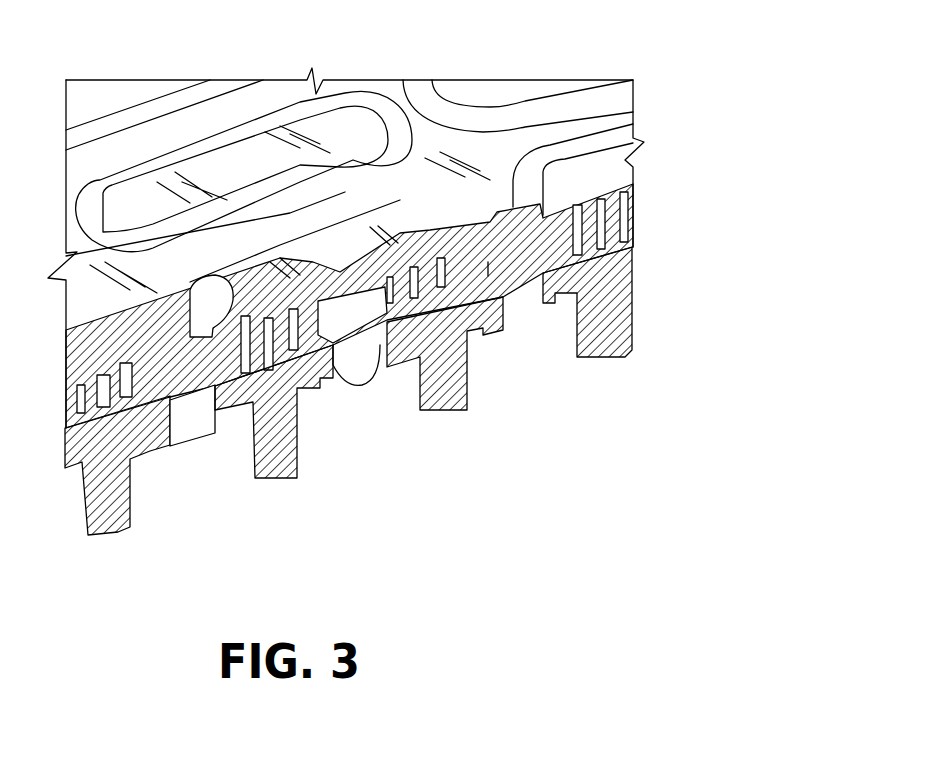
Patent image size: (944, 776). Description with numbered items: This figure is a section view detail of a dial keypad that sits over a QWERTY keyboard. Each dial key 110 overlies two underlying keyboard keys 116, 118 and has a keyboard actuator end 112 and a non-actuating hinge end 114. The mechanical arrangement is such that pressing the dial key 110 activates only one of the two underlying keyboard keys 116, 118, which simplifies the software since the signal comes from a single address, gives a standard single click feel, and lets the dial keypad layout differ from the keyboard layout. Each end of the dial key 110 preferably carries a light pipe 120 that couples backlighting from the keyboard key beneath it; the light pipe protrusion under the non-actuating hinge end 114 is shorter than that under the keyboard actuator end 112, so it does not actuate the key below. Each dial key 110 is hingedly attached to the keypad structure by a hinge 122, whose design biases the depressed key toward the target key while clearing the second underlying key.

The dial key 110 is at (346, 250).
The keyboard actuator end 112 is at (235, 408).
The non-actuating hinge end 114 is at (403, 297).
The keyboard key 116 is at (438, 288).
The keyboard key 118 is at (438, 398).
The light pipe 120 is at (292, 452).
The hinge 122 is at (518, 263).